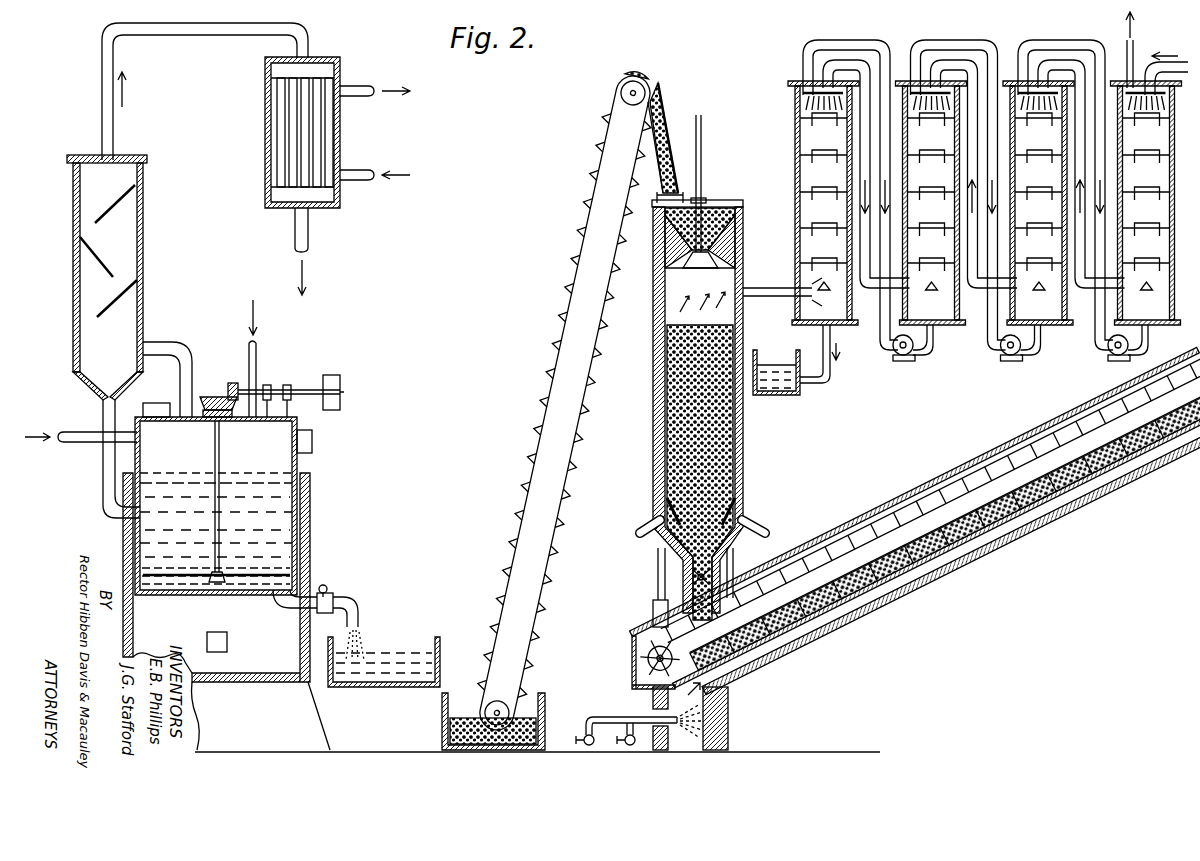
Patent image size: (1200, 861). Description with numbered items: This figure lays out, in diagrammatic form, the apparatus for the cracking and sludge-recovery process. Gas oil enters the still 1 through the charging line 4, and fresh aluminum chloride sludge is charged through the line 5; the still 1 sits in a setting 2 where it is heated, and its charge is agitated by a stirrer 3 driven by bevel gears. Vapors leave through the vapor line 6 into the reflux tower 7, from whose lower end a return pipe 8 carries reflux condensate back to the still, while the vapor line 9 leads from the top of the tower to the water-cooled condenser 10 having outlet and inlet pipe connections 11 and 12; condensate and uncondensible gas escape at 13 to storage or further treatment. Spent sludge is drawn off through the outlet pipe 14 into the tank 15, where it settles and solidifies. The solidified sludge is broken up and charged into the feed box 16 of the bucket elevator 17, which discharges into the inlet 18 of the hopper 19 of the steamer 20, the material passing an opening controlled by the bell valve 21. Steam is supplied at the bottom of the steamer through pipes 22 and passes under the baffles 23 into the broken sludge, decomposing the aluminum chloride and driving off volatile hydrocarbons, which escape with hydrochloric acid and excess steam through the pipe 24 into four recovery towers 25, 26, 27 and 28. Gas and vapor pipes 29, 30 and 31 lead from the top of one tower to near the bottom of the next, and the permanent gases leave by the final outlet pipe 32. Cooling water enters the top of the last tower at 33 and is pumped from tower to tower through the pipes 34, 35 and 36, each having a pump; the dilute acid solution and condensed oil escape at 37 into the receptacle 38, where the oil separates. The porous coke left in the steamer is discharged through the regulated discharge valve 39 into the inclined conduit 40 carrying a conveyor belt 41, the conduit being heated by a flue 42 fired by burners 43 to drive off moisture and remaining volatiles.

The still 1 is at (287, 517).
The setting 2 is at (307, 578).
The stirrer 3 is at (280, 577).
The charging line 4 is at (80, 443).
The charging line 5 is at (257, 367).
The vapor line 6 is at (180, 358).
The reflux tower 7 is at (143, 267).
The return pipe 8 is at (108, 483).
The vapor line 9 is at (167, 32).
The condenser 10 is at (265, 125).
The outlet pipe connection 11 is at (360, 170).
The inlet pipe connection 12 is at (355, 96).
The condensate and gas outlet 13 is at (308, 238).
The outlet pipe 14 is at (292, 603).
The tank 15 is at (417, 645).
The feed box 16 is at (440, 714).
The bucket elevator 17 is at (553, 534).
The inlet 18 is at (668, 127).
The hopper 19 is at (720, 208).
The steamer 20 is at (658, 395).
The bell valve 21 is at (694, 264).
The pipes 22 is at (645, 538).
The baffles 23 is at (742, 518).
The pipe 24 is at (763, 290).
The recovery tower 25 is at (797, 116).
The recovery tower 26 is at (952, 326).
The recovery tower 27 is at (1062, 327).
The recovery tower 28 is at (1167, 330).
The gas and vapor pipe 29 is at (860, 42).
The gas and vapor pipe 30 is at (960, 43).
The gas and vapor pipe 31 is at (1057, 42).
The final outlet pipe 32 is at (1135, 42).
The cooling water inlet 33 is at (1180, 52).
The pipe with pump 34 is at (1095, 358).
The pipe with pump 35 is at (992, 360).
The pipe with pump 36 is at (880, 357).
The outlet 37 is at (826, 368).
The receptacle 38 is at (783, 397).
The discharge valve 39 is at (693, 578).
The inclined conduit 40 is at (836, 524).
The conveyor belt 41 is at (915, 512).
The flue 42 is at (817, 622).
The burners 43 is at (635, 718).